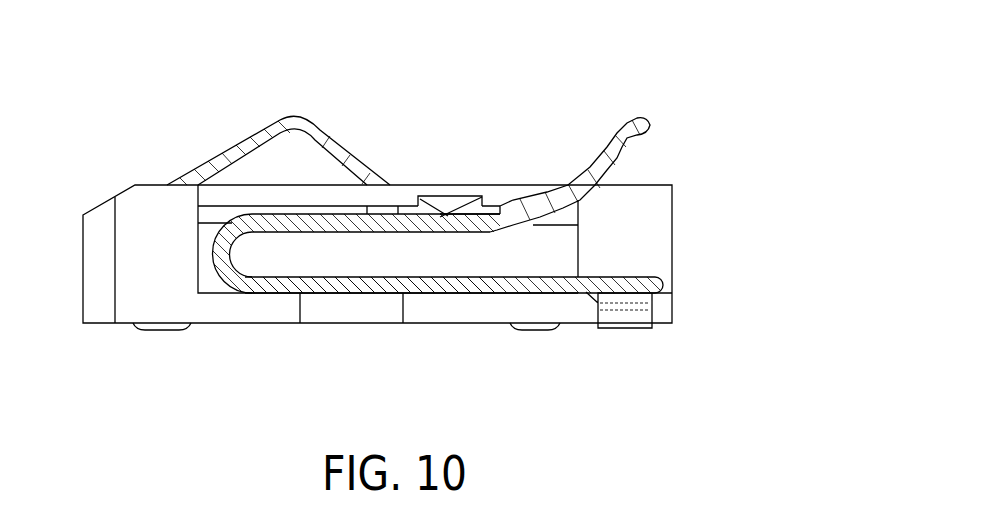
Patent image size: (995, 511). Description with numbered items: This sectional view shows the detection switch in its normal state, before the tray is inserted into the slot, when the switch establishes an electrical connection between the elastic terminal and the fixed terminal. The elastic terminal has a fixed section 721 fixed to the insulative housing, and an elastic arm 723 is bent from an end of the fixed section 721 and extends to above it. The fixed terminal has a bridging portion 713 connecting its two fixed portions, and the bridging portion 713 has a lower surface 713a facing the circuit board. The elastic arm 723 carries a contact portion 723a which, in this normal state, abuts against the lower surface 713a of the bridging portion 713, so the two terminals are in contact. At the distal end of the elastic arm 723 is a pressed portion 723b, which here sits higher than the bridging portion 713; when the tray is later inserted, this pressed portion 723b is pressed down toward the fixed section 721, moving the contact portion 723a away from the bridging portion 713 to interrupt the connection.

The fixed section 721 is at (358, 287).
The elastic arm 723 is at (308, 223).
The contact portion 723a is at (463, 220).
The pressed portion 723b is at (631, 114).
The bridging portion 713 is at (448, 200).
The lower surface 713a is at (445, 217).